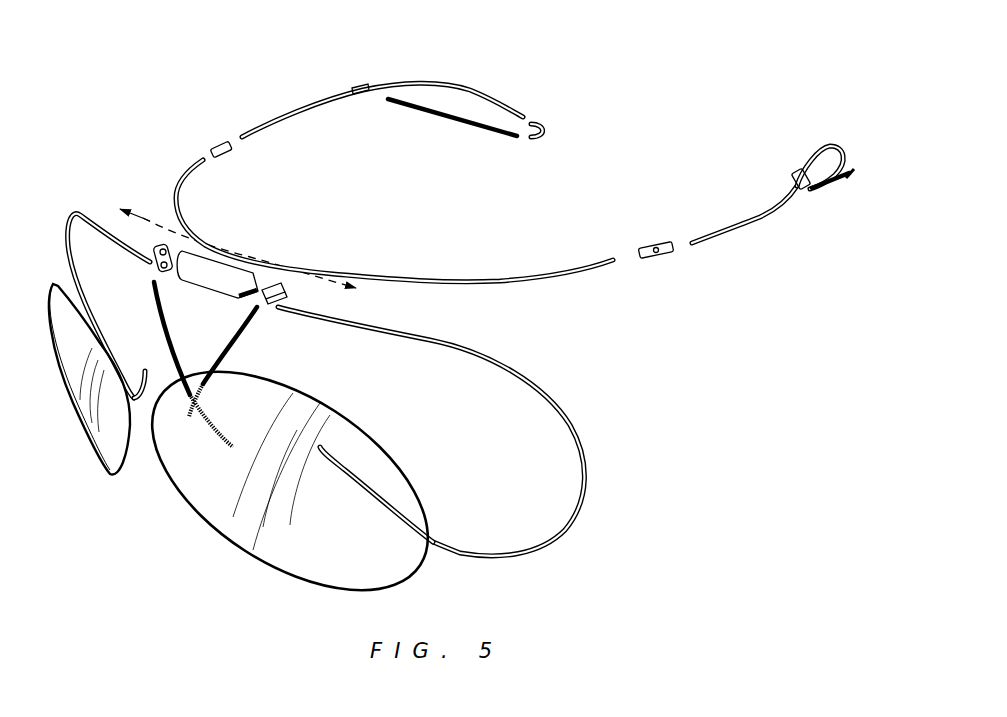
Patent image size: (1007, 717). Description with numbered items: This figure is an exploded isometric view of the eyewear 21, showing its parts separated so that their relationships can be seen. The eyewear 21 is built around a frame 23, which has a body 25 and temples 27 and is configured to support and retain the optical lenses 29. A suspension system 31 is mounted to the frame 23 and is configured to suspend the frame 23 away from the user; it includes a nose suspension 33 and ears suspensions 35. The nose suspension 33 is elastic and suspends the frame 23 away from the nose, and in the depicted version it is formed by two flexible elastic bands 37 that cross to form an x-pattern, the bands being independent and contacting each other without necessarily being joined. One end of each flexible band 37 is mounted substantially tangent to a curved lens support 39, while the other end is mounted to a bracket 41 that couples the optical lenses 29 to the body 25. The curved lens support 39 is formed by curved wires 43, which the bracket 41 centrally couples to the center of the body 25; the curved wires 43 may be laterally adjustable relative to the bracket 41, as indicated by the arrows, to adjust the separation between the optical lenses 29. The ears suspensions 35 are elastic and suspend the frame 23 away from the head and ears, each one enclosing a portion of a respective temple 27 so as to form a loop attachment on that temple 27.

The eyewear 21 is at (135, 88).
The frame 23 is at (593, 270).
The body 25 is at (333, 268).
The temples 27 is at (297, 110).
The optical lenses 29 is at (187, 460).
The suspension system 31 is at (465, 133).
The nose suspension 33 is at (240, 343).
The ears suspensions 35 is at (482, 80).
The flexible elastic bands 37 is at (217, 340).
The curved lens support 39 is at (143, 367).
The bracket 41 is at (218, 310).
The curved wires 43 is at (72, 213).